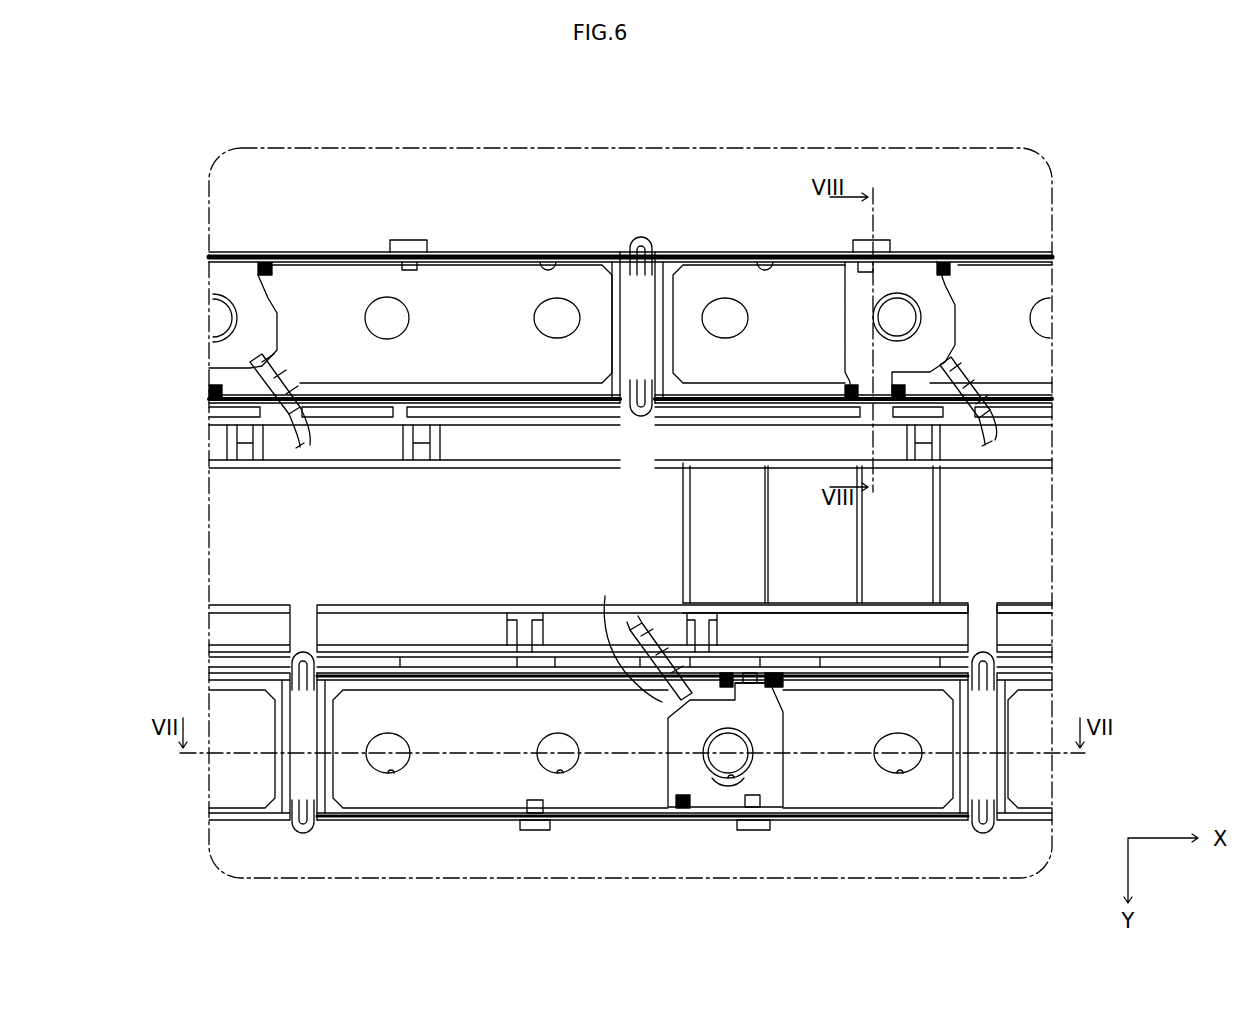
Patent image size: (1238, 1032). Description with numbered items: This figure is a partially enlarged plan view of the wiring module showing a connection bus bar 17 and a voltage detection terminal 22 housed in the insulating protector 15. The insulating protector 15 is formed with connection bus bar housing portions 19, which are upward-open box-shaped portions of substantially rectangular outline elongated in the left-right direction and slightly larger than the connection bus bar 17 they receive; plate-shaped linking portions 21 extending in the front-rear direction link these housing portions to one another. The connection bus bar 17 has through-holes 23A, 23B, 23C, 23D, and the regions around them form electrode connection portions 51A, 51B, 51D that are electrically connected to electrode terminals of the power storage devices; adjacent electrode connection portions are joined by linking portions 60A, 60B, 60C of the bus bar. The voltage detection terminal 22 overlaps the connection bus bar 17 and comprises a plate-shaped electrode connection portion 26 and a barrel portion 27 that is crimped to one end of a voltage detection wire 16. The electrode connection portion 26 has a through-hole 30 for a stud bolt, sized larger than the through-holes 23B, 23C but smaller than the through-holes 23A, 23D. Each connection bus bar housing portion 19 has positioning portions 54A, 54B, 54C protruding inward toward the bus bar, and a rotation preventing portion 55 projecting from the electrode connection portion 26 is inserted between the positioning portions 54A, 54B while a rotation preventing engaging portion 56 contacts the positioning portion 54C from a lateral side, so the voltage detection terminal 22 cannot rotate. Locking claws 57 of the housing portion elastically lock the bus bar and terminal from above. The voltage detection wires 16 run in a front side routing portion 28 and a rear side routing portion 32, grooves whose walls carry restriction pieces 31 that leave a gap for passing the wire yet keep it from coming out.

The insulating protector 15 is at (312, 250).
The voltage detection wire 16 is at (296, 436).
The connection bus bar 17 is at (455, 268).
The connection bus bar housing portion 19 is at (541, 262).
The linking portion 21 is at (937, 560).
The voltage detection terminal 22 is at (915, 275).
The through-hole 23A is at (396, 772).
The through-hole 23B is at (578, 768).
The through-hole 23C is at (734, 806).
The through-hole 23D is at (920, 768).
The electrode connection portion 26 is at (785, 792).
The barrel portion 27 is at (627, 635).
The front side routing portion 28 is at (437, 611).
The through-hole 30 is at (733, 790).
The restriction piece 31 is at (422, 447).
The rear side routing portion 32 is at (478, 461).
The electrode connection portion 51A is at (386, 774).
The electrode connection portion 51B is at (557, 774).
The electrode connection portion 51D is at (897, 773).
The positioning portion 54A is at (726, 678).
The positioning portion 54B is at (776, 678).
The positioning portion 54C is at (683, 797).
The rotation preventing portion 55 is at (764, 680).
The rotation preventing engaging portion 56 is at (722, 778).
The locking claw 57 is at (749, 672).
The linking portion 60A is at (477, 762).
The linking portion 60B is at (620, 762).
The linking portion 60C is at (835, 762).